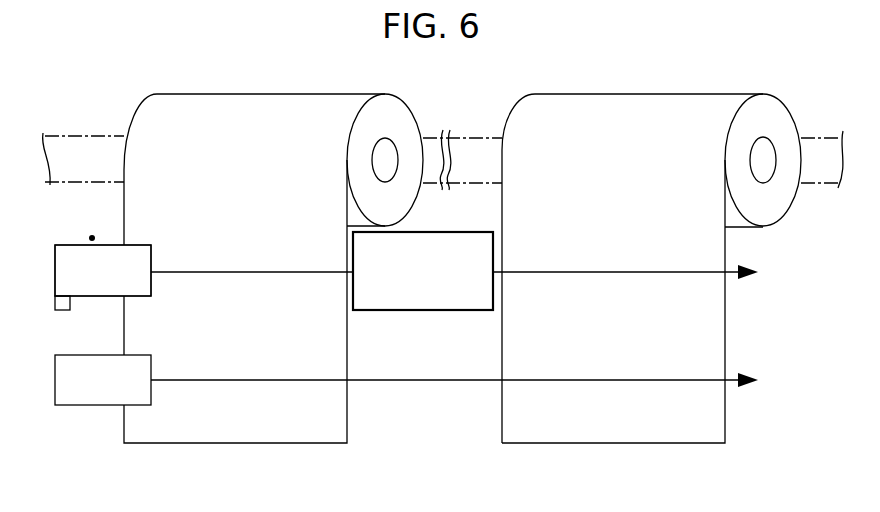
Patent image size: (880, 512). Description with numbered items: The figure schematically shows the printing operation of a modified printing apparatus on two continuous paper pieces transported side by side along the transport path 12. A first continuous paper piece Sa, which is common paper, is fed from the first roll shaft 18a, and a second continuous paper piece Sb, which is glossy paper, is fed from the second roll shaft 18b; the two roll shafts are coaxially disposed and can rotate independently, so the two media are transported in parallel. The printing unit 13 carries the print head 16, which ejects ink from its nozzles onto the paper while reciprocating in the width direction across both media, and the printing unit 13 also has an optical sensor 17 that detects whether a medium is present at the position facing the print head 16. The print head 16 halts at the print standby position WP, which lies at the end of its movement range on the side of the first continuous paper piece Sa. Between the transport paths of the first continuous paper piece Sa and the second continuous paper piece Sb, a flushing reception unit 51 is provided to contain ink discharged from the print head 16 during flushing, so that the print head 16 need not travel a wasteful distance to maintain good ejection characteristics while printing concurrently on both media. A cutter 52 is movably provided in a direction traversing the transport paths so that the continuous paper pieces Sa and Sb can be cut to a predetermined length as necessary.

The transport path 12 is at (130, 80).
The first roll shaft 18a is at (97, 135).
The second roll shaft 18b is at (812, 135).
The printing unit 13 is at (68, 237).
The print head 16 is at (99, 298).
The optical sensor 17 is at (55, 302).
The print standby position WP is at (93, 235).
The flushing reception unit 51 is at (423, 312).
The cutter 52 is at (99, 407).
The first continuous paper piece Sa is at (266, 103).
The second continuous paper piece Sb is at (643, 105).